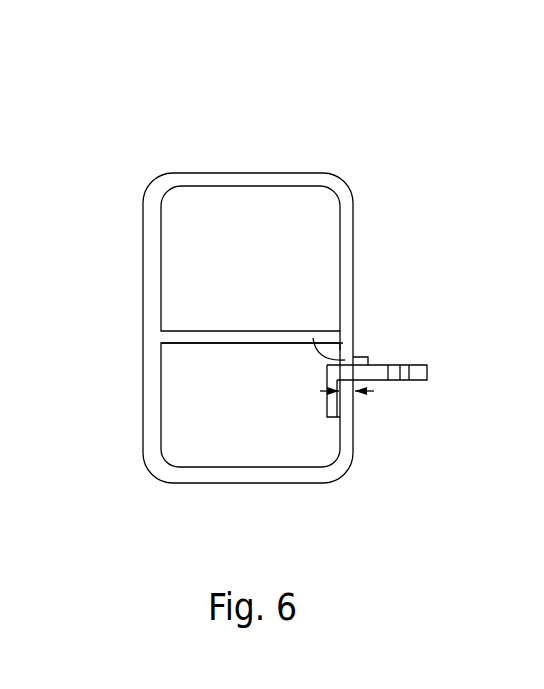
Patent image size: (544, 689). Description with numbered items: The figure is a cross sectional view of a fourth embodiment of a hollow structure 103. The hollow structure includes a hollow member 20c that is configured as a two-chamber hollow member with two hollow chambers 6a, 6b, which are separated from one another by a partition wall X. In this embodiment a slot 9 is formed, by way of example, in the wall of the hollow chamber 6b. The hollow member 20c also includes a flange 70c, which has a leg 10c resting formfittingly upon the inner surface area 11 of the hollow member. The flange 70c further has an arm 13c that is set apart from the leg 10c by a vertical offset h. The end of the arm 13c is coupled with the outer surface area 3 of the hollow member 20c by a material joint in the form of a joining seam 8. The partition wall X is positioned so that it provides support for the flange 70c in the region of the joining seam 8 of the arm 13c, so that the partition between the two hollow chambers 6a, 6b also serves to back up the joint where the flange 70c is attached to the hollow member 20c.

The hollow structure 103 is at (263, 126).
The outer surface area 3 is at (358, 217).
The hollow member 20c is at (153, 235).
The partition wall X is at (212, 335).
The hollow chamber 6a is at (264, 293).
The hollow chamber 6b is at (268, 441).
The slot 9 is at (313, 338).
The joining seam 8 is at (366, 337).
The arm 13c is at (364, 354).
The flange 70c is at (425, 362).
The leg 10c is at (333, 408).
The vertical offset h is at (373, 392).
The inner surface area 11 is at (342, 433).